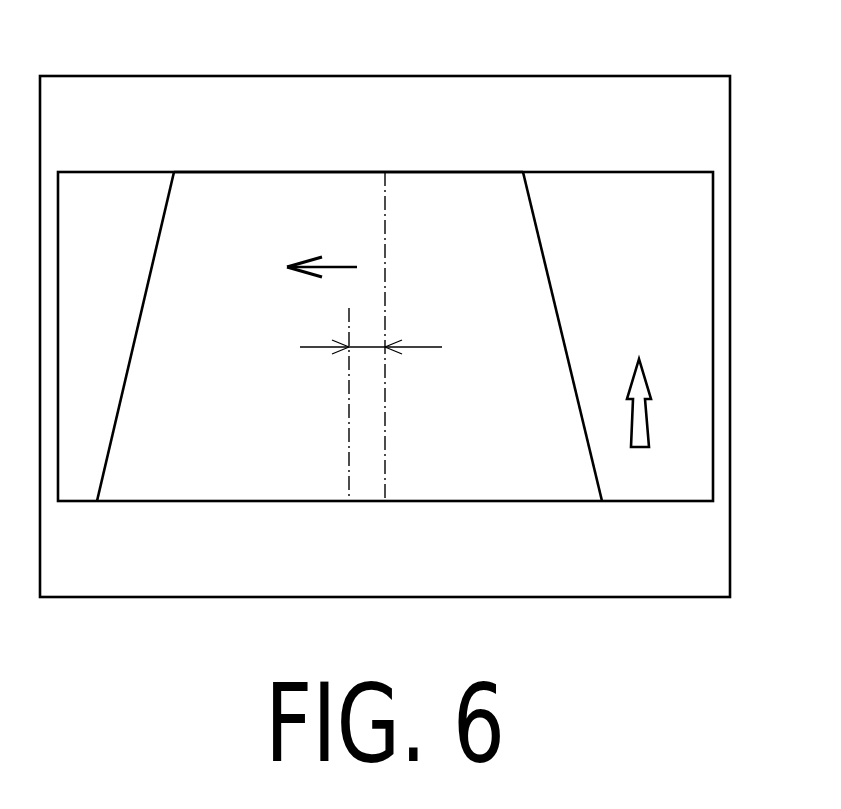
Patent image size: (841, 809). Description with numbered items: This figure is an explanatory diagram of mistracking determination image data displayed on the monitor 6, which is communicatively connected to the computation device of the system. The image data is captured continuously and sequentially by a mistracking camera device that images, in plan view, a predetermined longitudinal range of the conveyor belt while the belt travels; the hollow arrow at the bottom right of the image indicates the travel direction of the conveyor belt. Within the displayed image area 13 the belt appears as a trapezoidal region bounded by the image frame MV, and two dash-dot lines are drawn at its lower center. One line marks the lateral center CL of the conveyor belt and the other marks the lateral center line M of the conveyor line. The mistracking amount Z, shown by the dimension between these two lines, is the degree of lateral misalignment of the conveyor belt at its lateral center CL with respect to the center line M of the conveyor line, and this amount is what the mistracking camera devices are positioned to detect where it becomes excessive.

The monitor 6 is at (527, 93).
The captured image 13 is at (243, 485).
The vehicle marker line MV is at (245, 170).
The lateral center line M is at (385, 475).
The lateral center CL is at (349, 457).
The mistracking amount Z is at (371, 332).